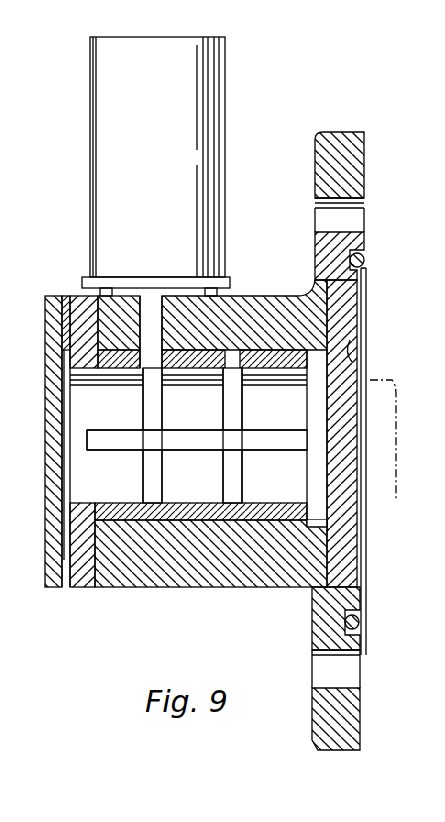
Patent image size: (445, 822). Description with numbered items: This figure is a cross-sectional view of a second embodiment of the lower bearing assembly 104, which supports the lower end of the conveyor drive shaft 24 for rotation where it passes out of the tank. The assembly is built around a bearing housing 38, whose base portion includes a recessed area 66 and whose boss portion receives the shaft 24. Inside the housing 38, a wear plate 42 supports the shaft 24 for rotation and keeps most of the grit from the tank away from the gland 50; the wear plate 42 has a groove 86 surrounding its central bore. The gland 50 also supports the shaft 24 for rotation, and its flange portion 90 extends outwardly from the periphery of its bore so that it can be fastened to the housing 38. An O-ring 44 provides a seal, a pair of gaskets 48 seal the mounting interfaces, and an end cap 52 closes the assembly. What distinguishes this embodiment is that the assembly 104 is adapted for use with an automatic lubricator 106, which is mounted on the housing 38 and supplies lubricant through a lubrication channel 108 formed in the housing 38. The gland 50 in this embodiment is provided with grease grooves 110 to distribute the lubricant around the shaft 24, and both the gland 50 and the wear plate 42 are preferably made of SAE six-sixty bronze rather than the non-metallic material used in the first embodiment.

The automatic lubricator 106 is at (190, 83).
The lower bearing assembly 104 is at (320, 152).
The lubrication channel 108 is at (155, 298).
The groove 86 is at (353, 356).
The O-ring 44 is at (366, 373).
The drive shaft 24 is at (372, 505).
The end cap 52 is at (52, 443).
The grease grooves 110 is at (150, 442).
The wear plate 42 is at (355, 553).
The flange portion 90 is at (88, 566).
The gaskets 48 is at (64, 590).
The gland 50 is at (172, 522).
The bearing housing 38 is at (205, 572).
The recessed area 66 is at (318, 590).